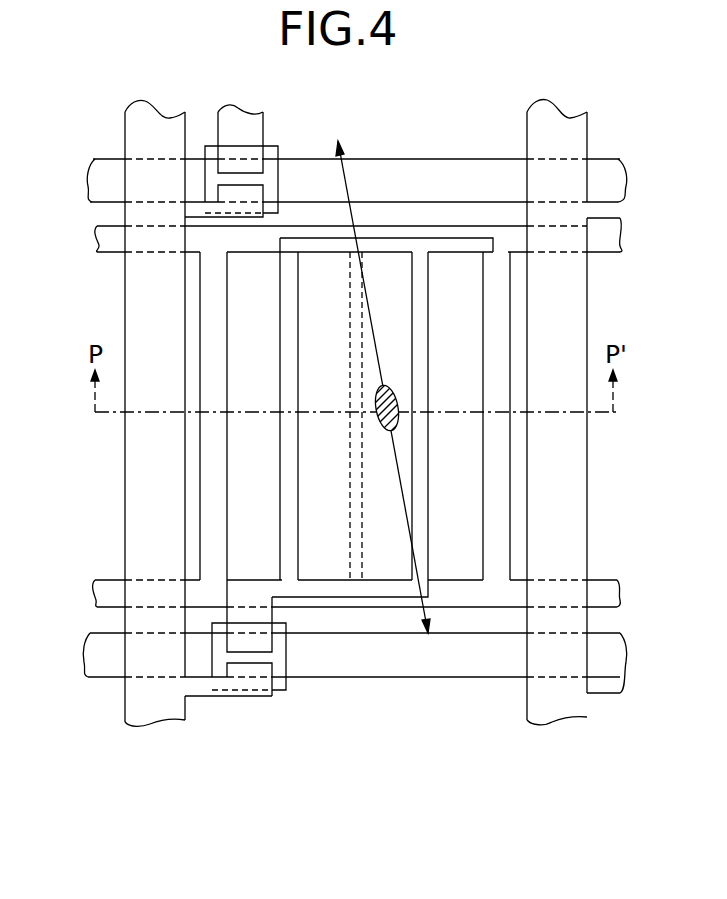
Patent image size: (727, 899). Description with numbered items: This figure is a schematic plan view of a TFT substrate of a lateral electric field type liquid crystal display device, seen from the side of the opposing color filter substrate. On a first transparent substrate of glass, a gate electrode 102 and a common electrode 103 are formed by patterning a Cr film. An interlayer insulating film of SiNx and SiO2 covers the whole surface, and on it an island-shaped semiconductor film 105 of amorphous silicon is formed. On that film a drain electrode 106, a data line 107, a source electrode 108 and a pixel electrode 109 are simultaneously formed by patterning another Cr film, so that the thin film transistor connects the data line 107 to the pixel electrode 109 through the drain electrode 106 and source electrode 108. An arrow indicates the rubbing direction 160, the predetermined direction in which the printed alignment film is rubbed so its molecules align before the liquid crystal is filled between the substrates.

The gate electrode 102 is at (507, 665).
The common electrode 103 is at (458, 598).
The island-shaped semiconductor film 105 is at (270, 146).
The drain electrode 106 is at (252, 670).
The data line 107 is at (157, 705).
The source electrode 108 is at (265, 642).
The pixel electrode 109 is at (285, 318).
The rubbing direction 160 is at (345, 183).